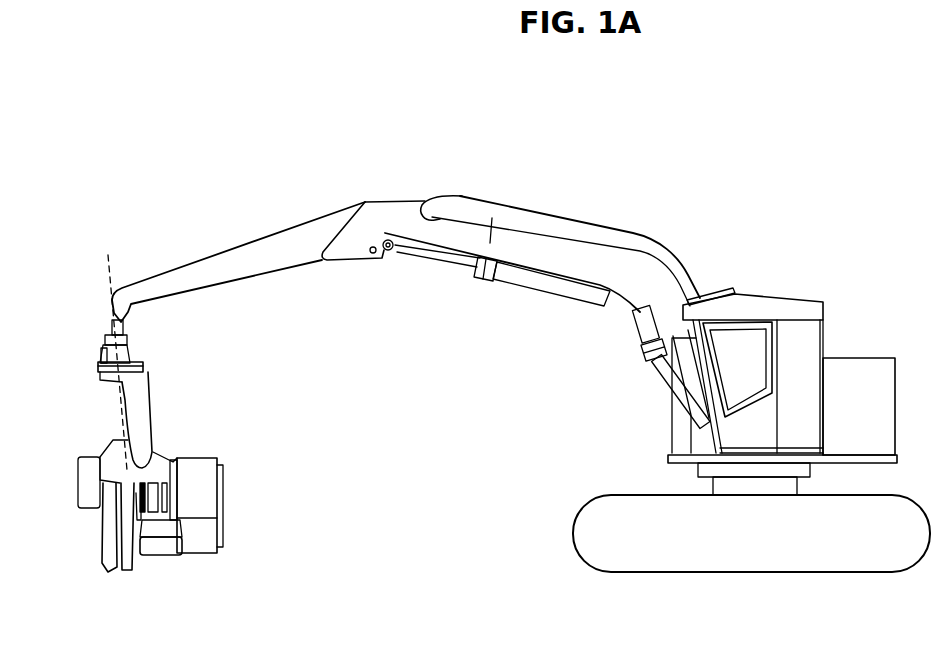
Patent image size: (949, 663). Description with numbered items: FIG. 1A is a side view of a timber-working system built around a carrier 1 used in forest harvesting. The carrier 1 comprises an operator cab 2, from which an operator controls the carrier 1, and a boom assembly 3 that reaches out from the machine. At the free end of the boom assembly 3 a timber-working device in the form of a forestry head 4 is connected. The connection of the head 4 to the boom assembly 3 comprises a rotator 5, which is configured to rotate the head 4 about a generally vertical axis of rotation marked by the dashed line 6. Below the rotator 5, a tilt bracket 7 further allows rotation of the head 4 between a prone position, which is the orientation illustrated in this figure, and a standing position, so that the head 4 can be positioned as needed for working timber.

The carrier 1 is at (205, 194).
The operator cab 2 is at (802, 298).
The boom assembly 3 is at (571, 222).
The forestry head 4 is at (253, 443).
The rotator 5 is at (127, 342).
The axis of rotation 6 is at (110, 351).
The tilt bracket 7 is at (158, 422).